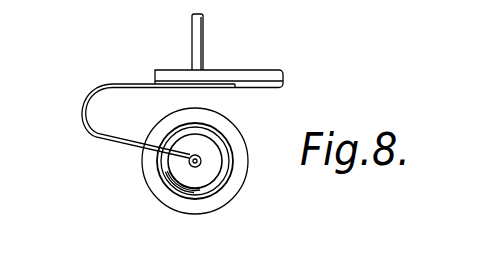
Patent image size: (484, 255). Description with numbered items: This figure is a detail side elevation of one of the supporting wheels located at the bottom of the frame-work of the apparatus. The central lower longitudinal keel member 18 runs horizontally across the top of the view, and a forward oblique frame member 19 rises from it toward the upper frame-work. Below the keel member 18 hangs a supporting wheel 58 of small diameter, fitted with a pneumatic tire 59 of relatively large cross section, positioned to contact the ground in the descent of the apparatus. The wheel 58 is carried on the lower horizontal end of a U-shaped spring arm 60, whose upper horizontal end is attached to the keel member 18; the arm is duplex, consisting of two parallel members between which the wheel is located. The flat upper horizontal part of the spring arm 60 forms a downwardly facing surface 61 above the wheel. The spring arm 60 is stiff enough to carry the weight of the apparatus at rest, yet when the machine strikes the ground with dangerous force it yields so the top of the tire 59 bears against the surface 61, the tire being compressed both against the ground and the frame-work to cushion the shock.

The longitudinal keel member 18 is at (273, 78).
The forward oblique frame member 19 is at (197, 37).
The supporting wheel 58 is at (227, 168).
The pneumatic tire 59 is at (217, 197).
The U-shaped spring arm 60 is at (90, 96).
The downwardly facing surface 61 is at (238, 89).